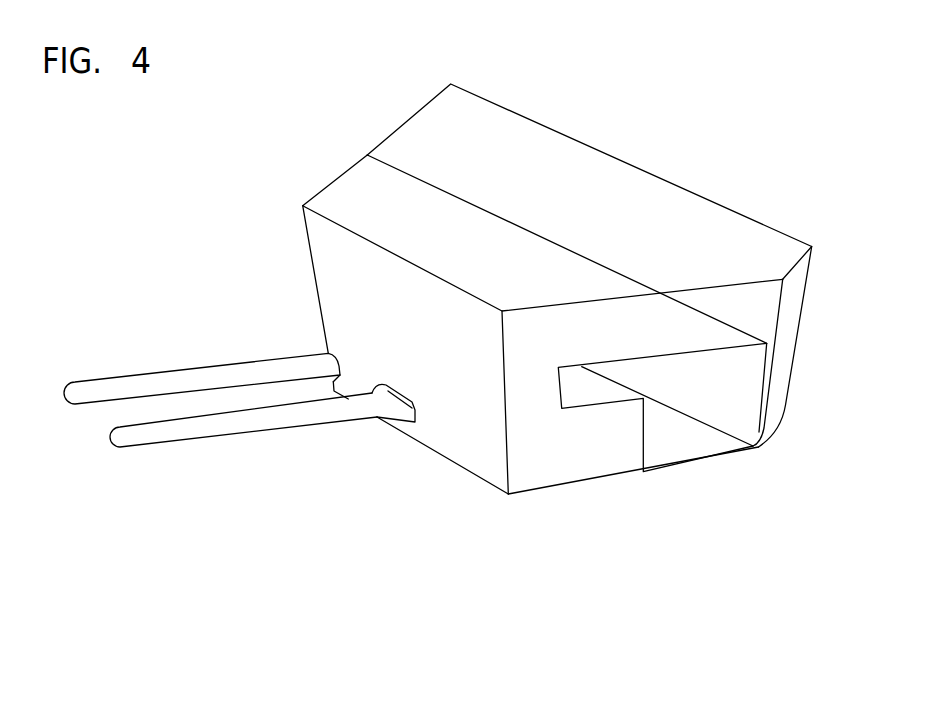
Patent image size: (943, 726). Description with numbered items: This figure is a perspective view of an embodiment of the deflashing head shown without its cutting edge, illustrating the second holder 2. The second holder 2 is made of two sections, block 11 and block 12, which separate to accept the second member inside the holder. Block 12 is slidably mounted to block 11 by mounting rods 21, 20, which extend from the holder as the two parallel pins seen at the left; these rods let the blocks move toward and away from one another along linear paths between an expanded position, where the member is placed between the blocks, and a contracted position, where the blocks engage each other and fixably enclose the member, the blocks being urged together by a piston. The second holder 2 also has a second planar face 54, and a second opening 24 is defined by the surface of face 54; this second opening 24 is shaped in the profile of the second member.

The second holder 2 is at (668, 119).
The block 11 is at (498, 135).
The block 12 is at (355, 196).
The mounting rod 20 is at (135, 448).
The mounting rod 21 is at (83, 380).
The second opening 24 is at (748, 392).
The second planar face 54 is at (571, 443).